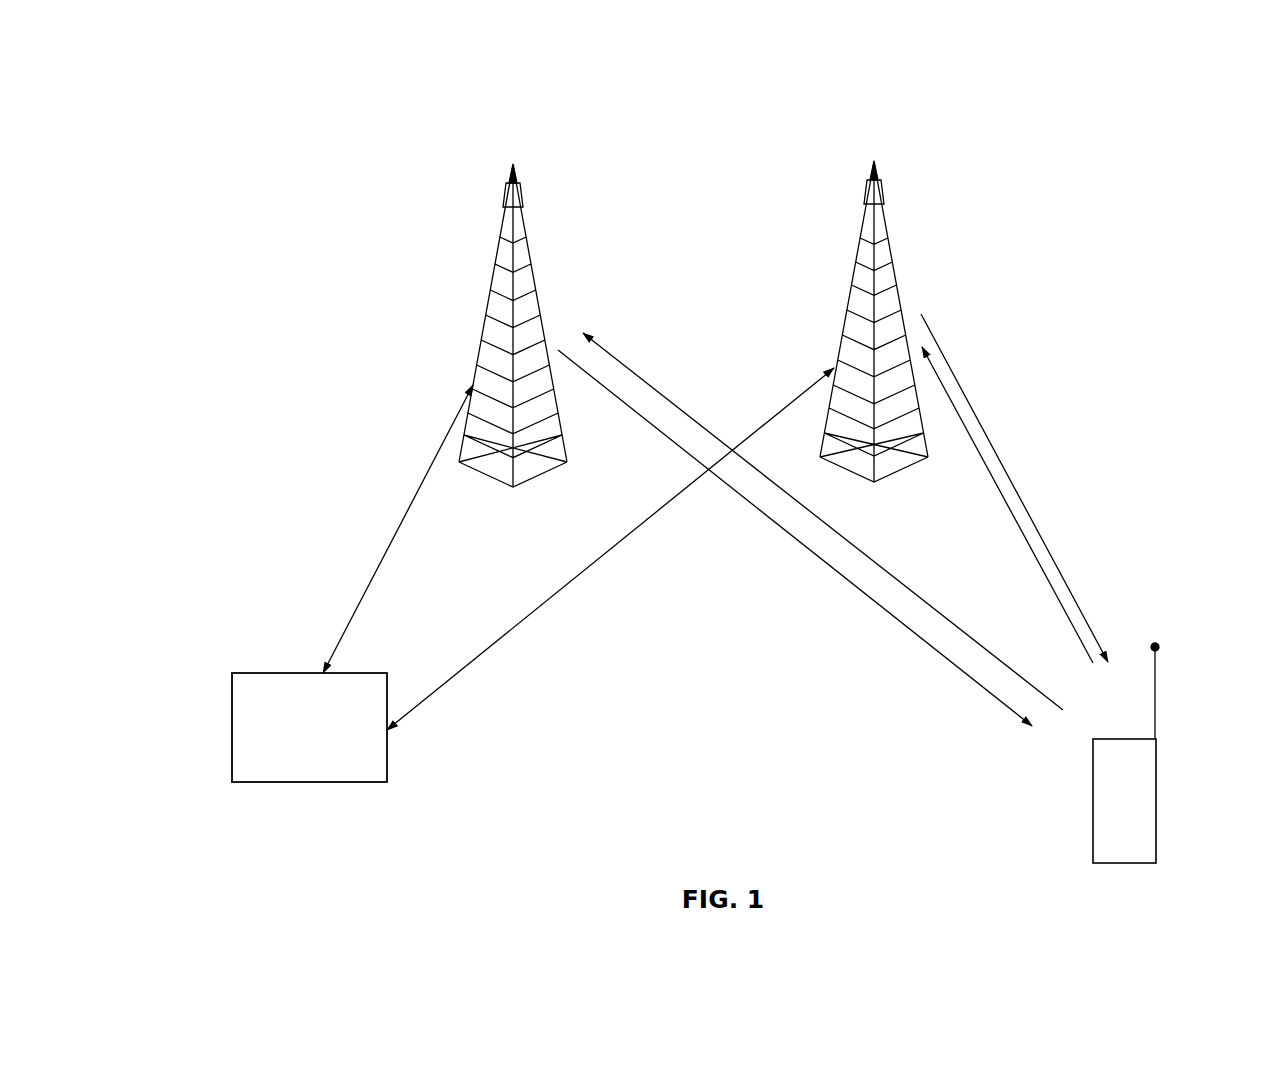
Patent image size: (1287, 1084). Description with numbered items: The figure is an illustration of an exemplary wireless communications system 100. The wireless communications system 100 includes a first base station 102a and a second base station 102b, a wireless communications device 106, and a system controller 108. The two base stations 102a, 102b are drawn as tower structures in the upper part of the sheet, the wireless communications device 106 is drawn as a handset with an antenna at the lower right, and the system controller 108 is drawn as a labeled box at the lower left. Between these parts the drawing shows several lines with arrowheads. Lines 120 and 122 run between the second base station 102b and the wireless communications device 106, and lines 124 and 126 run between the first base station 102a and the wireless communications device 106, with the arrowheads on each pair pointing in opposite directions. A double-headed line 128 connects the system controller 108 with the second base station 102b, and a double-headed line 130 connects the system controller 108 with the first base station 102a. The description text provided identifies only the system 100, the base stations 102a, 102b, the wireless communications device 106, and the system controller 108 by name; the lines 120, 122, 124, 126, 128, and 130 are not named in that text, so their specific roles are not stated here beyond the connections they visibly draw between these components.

The wireless communications system 100 is at (1063, 93).
The first base station 102a is at (497, 233).
The second base station 102b is at (858, 244).
The wireless communications device 106 is at (1156, 793).
The system controller 108 is at (232, 713).
The downlink signal from base station 102b 120 is at (1034, 516).
The uplink signal to base station 102b 122 is at (1005, 504).
The downlink signal from base station 102a 124 is at (829, 567).
The uplink signal to base station 102a 126 is at (893, 573).
The link between system controller and base station 102b 128 is at (563, 581).
The link between system controller and base station 102a 130 is at (413, 497).